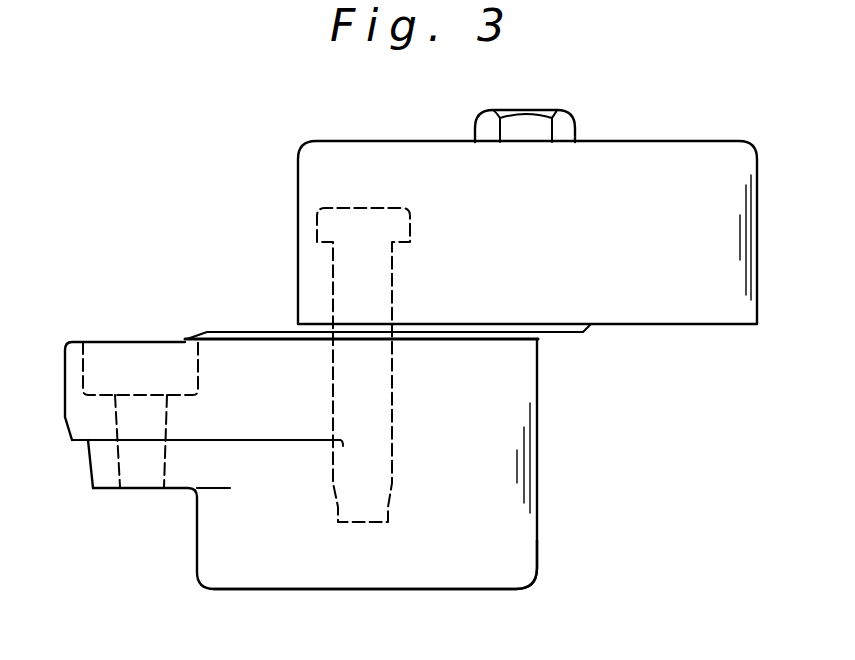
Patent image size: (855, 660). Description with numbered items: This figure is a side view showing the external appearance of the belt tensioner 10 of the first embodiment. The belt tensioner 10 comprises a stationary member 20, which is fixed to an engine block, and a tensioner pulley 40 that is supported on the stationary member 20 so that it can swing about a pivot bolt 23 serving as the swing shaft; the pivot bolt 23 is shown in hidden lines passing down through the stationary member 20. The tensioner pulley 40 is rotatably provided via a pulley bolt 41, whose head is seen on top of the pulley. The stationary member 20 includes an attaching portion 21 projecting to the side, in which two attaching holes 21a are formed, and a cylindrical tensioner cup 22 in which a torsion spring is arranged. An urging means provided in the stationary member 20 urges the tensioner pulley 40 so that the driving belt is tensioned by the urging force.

The belt tensioner 10 is at (226, 261).
The stationary member 20 is at (549, 483).
The attaching portion 21 is at (93, 488).
The attaching hole 21a is at (118, 468).
The tensioner cup 22 is at (527, 548).
The pivot bolt 23 is at (320, 212).
The tensioner pulley 40 is at (648, 324).
The pulley bolt 41 is at (566, 130).